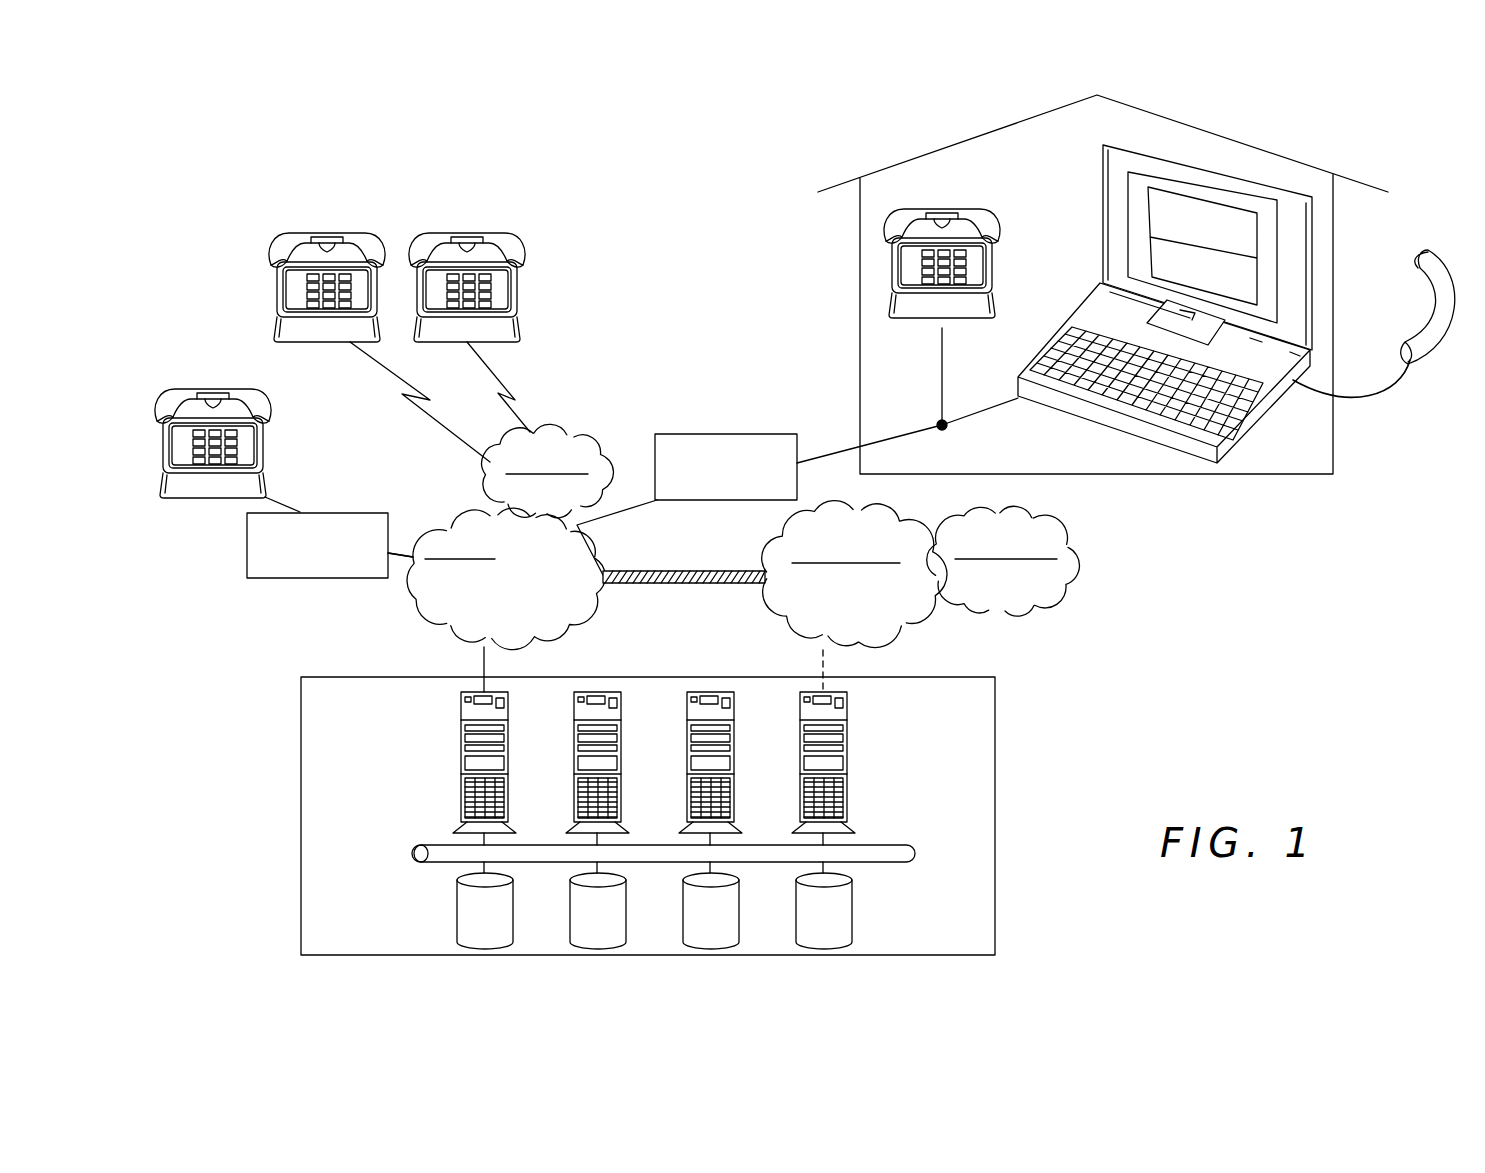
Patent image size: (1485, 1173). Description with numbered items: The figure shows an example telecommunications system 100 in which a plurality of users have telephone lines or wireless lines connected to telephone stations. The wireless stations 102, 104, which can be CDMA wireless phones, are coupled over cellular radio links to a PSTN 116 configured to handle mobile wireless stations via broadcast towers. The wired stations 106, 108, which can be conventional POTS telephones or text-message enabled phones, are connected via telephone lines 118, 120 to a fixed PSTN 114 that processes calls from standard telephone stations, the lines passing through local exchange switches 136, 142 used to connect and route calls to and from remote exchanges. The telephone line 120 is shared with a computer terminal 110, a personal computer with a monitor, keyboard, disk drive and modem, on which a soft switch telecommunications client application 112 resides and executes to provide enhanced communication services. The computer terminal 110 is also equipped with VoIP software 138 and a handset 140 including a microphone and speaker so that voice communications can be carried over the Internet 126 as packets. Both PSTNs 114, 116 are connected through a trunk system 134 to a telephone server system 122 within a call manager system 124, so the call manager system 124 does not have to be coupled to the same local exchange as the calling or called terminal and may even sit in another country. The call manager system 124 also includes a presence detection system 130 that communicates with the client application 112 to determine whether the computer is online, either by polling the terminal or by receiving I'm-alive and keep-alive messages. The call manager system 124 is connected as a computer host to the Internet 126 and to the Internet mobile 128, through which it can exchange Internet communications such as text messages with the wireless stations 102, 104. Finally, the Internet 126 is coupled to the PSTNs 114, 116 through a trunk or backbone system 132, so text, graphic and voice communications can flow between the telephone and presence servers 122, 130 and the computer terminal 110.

The telecommunications system 100 is at (428, 138).
The wireless telephone station 102 is at (330, 228).
The wireless telephone station 104 is at (470, 228).
The wired telephone station 106 is at (237, 385).
The wired telephone station 108 is at (943, 203).
The computer terminal 110 is at (1100, 167).
The telecommunications client application 112 is at (1212, 286).
The fixed PSTN 114 is at (465, 515).
The mobile PSTN 116 is at (560, 432).
The telephone line 118 is at (265, 492).
The telephone line 120 is at (840, 450).
The telephone server system 122 is at (461, 722).
The call manager system 124 is at (696, 816).
The Internet 126 is at (895, 617).
The Internet mobile 128 is at (1012, 613).
The presence detection system 130 is at (847, 722).
The trunk or backbone system 132 is at (640, 571).
The trunk system 134 is at (484, 666).
The local exchange switch 136 is at (745, 434).
The VoIP software 138 is at (1220, 276).
The handset 140 is at (1450, 256).
The local exchange switch 142 is at (295, 579).